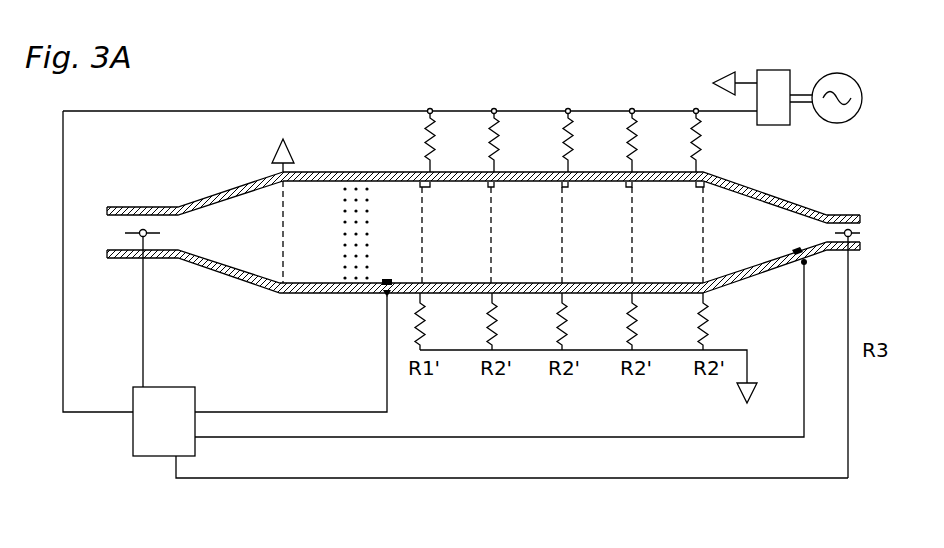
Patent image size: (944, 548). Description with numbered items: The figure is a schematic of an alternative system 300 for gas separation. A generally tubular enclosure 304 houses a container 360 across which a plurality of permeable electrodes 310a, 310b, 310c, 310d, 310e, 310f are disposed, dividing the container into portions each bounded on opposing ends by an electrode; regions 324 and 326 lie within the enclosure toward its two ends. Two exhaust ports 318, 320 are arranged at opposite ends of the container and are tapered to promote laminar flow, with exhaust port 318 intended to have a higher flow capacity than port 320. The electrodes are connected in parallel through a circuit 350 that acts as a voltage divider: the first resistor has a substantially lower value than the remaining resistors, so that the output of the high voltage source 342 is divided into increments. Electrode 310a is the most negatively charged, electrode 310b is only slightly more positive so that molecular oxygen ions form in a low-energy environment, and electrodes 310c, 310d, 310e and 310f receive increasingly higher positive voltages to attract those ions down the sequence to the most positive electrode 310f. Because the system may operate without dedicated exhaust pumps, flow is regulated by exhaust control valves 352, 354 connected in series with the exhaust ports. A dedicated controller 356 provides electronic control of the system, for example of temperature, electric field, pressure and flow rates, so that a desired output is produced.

The system for gas separation 300 is at (243, 53).
The generally tubular enclosure 304 is at (743, 185).
The permeable electrode 310a is at (287, 267).
The permeable electrode 310b is at (421, 272).
The permeable electrode 310c is at (491, 272).
The permeable electrode 310d is at (561, 272).
The permeable electrode 310e is at (631, 272).
The permeable electrode 310f is at (707, 258).
The exhaust port 318 is at (105, 221).
The exhaust port 320 is at (861, 223).
The inlet chamber 324 is at (246, 243).
The outlet chamber 326 is at (769, 244).
The high voltage source 342 is at (783, 68).
The parallel circuit 350 is at (542, 76).
The exhaust control valve 352 is at (145, 222).
The exhaust control valve 354 is at (856, 233).
The controller 356 is at (185, 435).
The container 360 is at (322, 200).